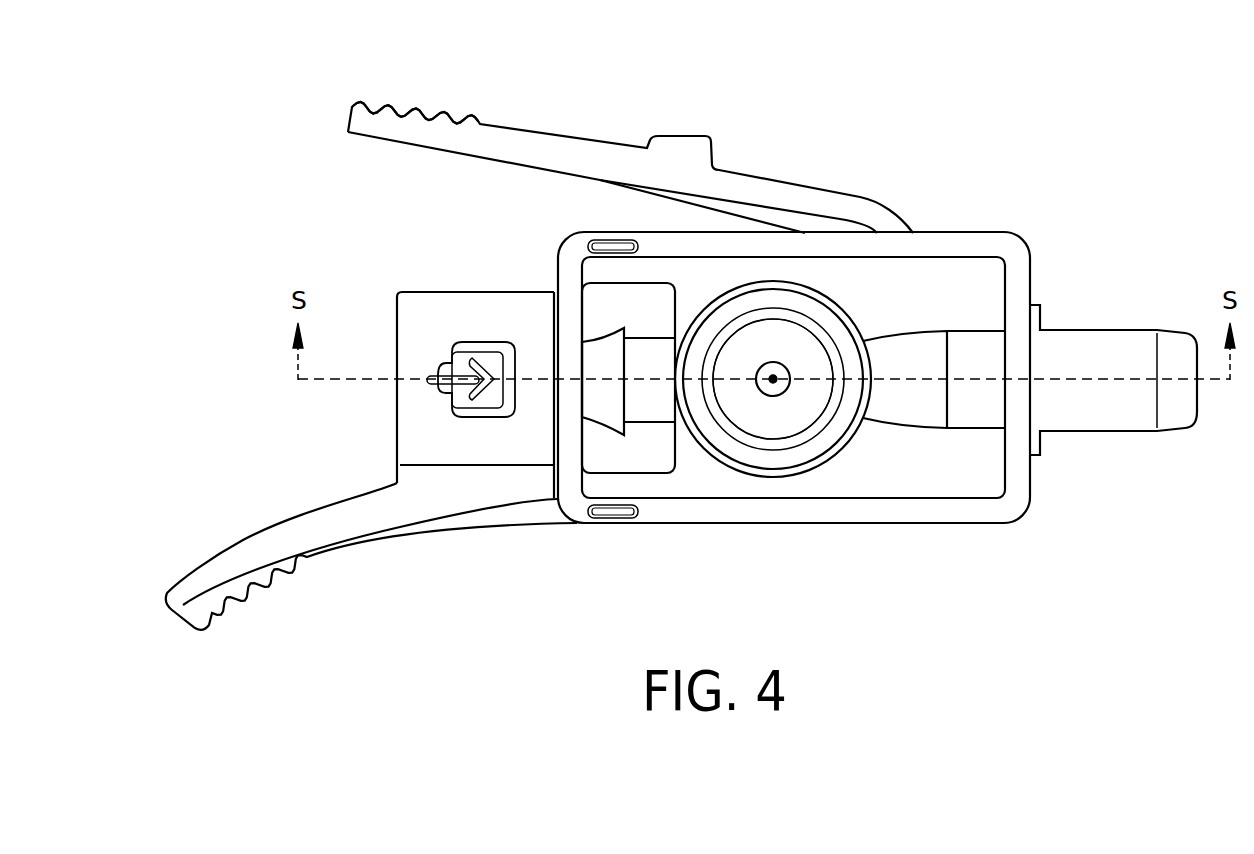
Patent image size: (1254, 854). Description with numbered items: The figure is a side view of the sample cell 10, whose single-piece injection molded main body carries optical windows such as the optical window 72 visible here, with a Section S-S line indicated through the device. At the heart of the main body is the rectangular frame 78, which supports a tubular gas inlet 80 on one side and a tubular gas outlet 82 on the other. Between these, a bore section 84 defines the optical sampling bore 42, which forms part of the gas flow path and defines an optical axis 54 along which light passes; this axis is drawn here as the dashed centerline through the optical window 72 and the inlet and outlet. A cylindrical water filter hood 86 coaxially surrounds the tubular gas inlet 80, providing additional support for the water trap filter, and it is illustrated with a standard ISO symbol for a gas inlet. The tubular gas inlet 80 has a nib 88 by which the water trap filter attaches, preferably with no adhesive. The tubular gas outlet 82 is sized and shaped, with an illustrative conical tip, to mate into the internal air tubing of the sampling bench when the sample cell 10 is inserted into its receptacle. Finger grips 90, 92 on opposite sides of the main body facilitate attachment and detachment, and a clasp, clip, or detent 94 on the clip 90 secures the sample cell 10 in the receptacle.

The sample cell 10 is at (312, 213).
The optical sampling bore 42 is at (745, 413).
The optical axis 54 is at (778, 397).
The optical window 72 is at (812, 303).
The rectangular frame 78 is at (952, 232).
The tubular gas inlet 80 is at (652, 400).
The tubular gas outlet 82 is at (1098, 328).
The bore section 84 is at (847, 420).
The cylindrical water filter hood 86 is at (438, 308).
The nib 88 is at (603, 333).
The finger grip 90 is at (421, 120).
The finger grip 92 is at (277, 582).
The detent 94 is at (678, 133).